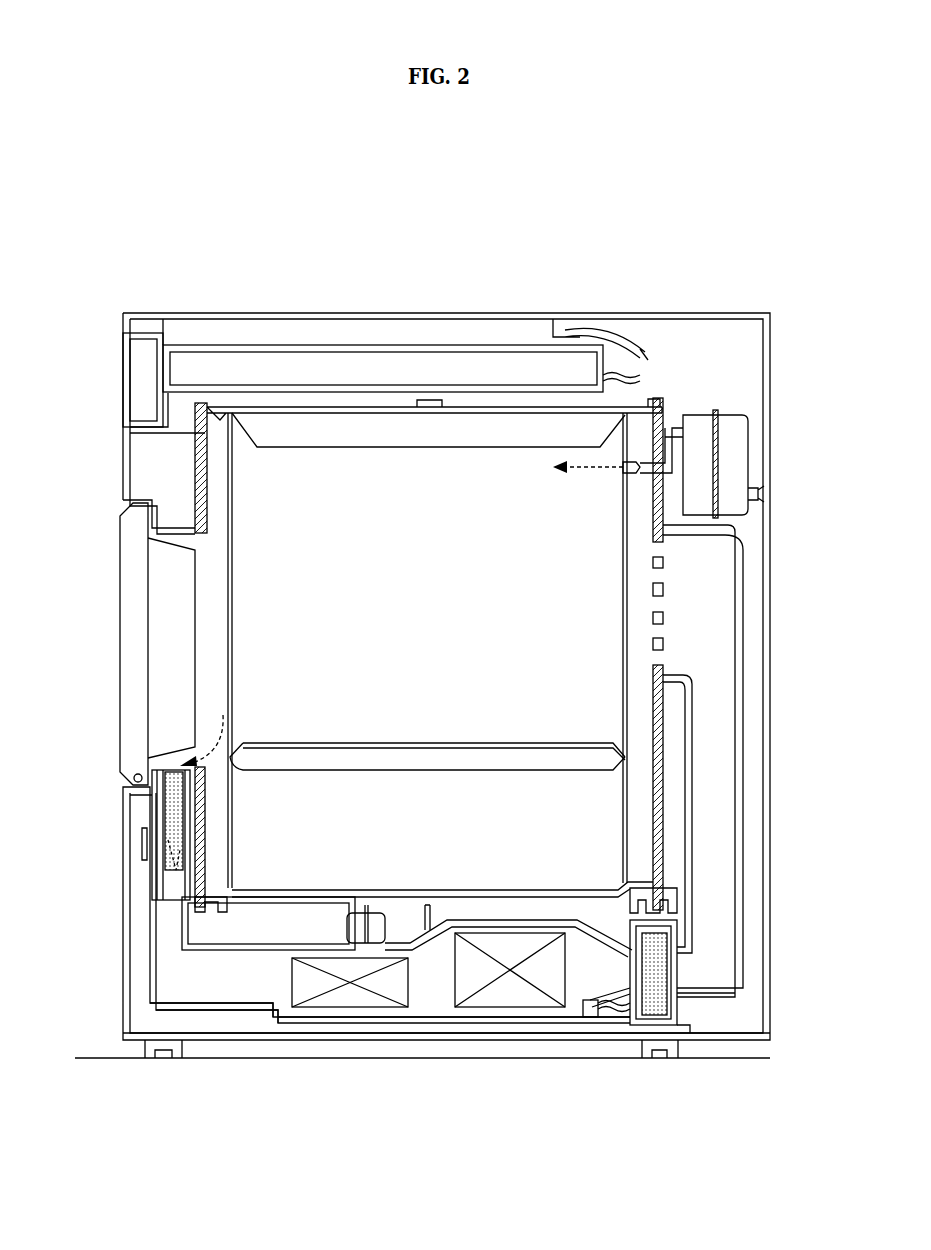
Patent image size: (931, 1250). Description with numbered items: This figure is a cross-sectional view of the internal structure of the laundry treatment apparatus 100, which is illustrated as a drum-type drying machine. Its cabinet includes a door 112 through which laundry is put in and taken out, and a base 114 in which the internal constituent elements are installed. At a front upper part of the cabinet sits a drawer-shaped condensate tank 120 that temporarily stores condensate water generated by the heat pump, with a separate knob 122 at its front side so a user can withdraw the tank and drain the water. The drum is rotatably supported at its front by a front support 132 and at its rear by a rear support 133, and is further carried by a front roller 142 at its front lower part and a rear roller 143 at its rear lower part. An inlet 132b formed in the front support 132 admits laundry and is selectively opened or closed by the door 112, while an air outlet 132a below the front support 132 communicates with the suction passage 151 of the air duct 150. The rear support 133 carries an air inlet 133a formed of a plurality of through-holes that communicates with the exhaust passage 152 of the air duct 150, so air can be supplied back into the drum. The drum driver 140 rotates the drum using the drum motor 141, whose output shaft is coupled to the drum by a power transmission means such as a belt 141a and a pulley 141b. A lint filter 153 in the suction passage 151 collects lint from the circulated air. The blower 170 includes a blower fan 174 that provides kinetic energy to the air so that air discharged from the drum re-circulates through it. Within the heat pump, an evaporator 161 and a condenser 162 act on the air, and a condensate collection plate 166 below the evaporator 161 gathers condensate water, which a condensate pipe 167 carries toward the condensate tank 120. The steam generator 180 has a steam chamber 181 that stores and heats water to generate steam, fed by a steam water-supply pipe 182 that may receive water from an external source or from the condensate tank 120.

The laundry treatment apparatus 100 is at (85, 304).
The door 112 is at (135, 650).
The base 114 is at (555, 1040).
The condensate tank 120 is at (308, 345).
The knob 122 is at (145, 378).
The front support 132 is at (200, 462).
The air outlet 132a is at (215, 725).
The inlet 132b is at (215, 596).
The rear support 133 is at (667, 750).
The air inlet 133a is at (668, 568).
The drum driver 140 is at (345, 919).
The drum motor 141 is at (360, 930).
The belt 141a is at (428, 400).
The pulley 141b is at (392, 945).
The front roller 142 is at (205, 905).
The rear roller 143 is at (652, 892).
The air duct 150 is at (221, 1010).
The suction passage 151 is at (160, 895).
The exhaust passage 152 is at (705, 640).
The lint filter 153 is at (165, 772).
The evaporator 161 is at (358, 997).
The condenser 162 is at (497, 987).
The condensate collection plate 166 is at (293, 1020).
The condensate pipe 167 is at (608, 1017).
The blower 170 is at (672, 968).
The blower fan 174 is at (675, 1002).
The steam generator 180 is at (745, 410).
The steam chamber 181 is at (640, 455).
The steam water-supply pipe 182 is at (758, 495).